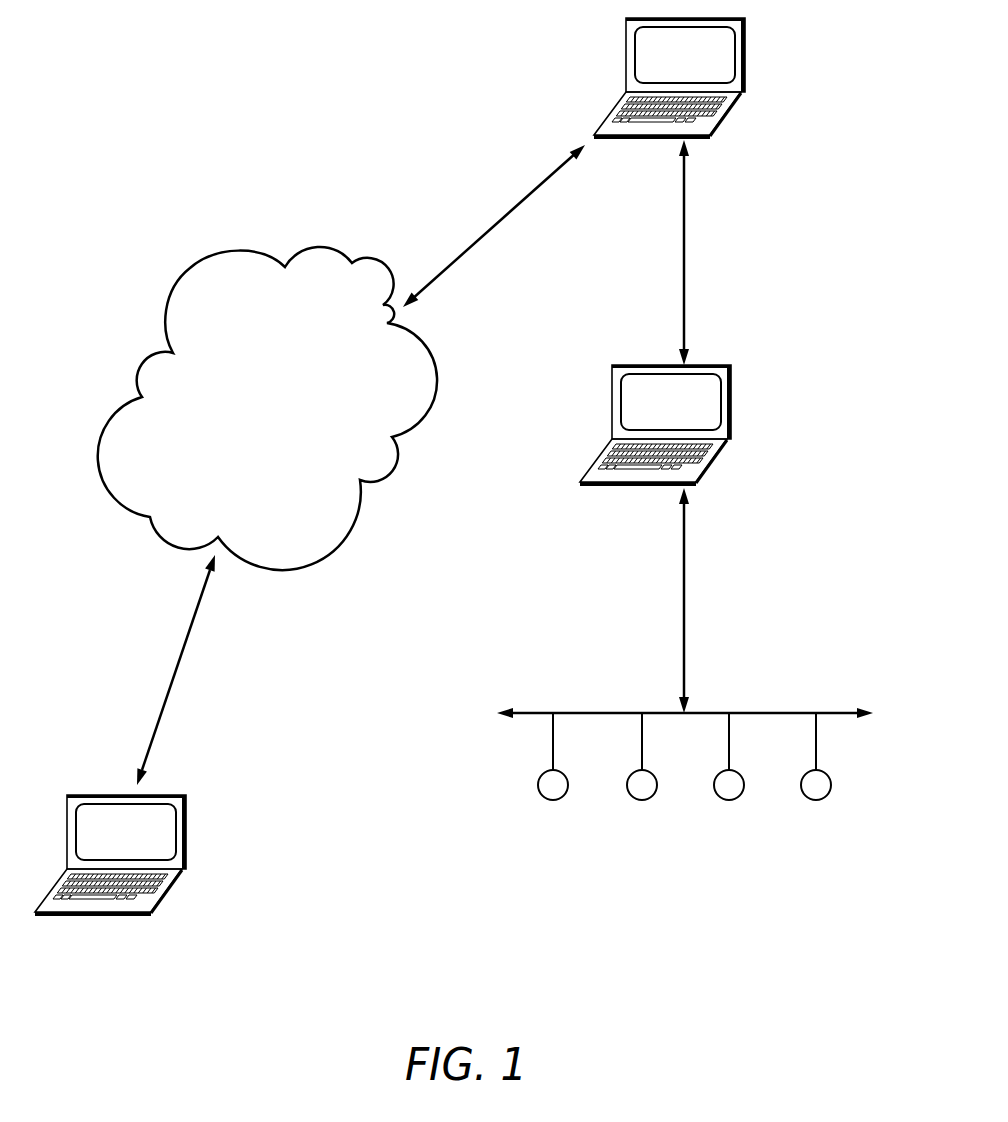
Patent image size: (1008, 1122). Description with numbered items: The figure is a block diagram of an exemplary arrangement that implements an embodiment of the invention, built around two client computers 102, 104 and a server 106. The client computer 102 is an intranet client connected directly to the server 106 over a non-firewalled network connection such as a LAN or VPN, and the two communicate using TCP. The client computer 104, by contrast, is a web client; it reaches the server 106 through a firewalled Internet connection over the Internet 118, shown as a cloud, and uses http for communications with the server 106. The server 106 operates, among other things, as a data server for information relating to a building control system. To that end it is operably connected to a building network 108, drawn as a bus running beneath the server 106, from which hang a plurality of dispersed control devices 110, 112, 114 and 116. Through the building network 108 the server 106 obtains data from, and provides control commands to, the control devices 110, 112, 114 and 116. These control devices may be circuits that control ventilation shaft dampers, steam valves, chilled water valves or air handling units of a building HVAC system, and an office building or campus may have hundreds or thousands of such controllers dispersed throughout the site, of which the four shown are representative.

The client computer 102 is at (747, 53).
The client computer 104 is at (187, 828).
The server 106 is at (734, 395).
The building network 108 is at (630, 680).
The control device 110 is at (553, 800).
The control device 112 is at (642, 800).
The control device 114 is at (729, 800).
The control device 116 is at (816, 800).
The Internet 118 is at (237, 247).